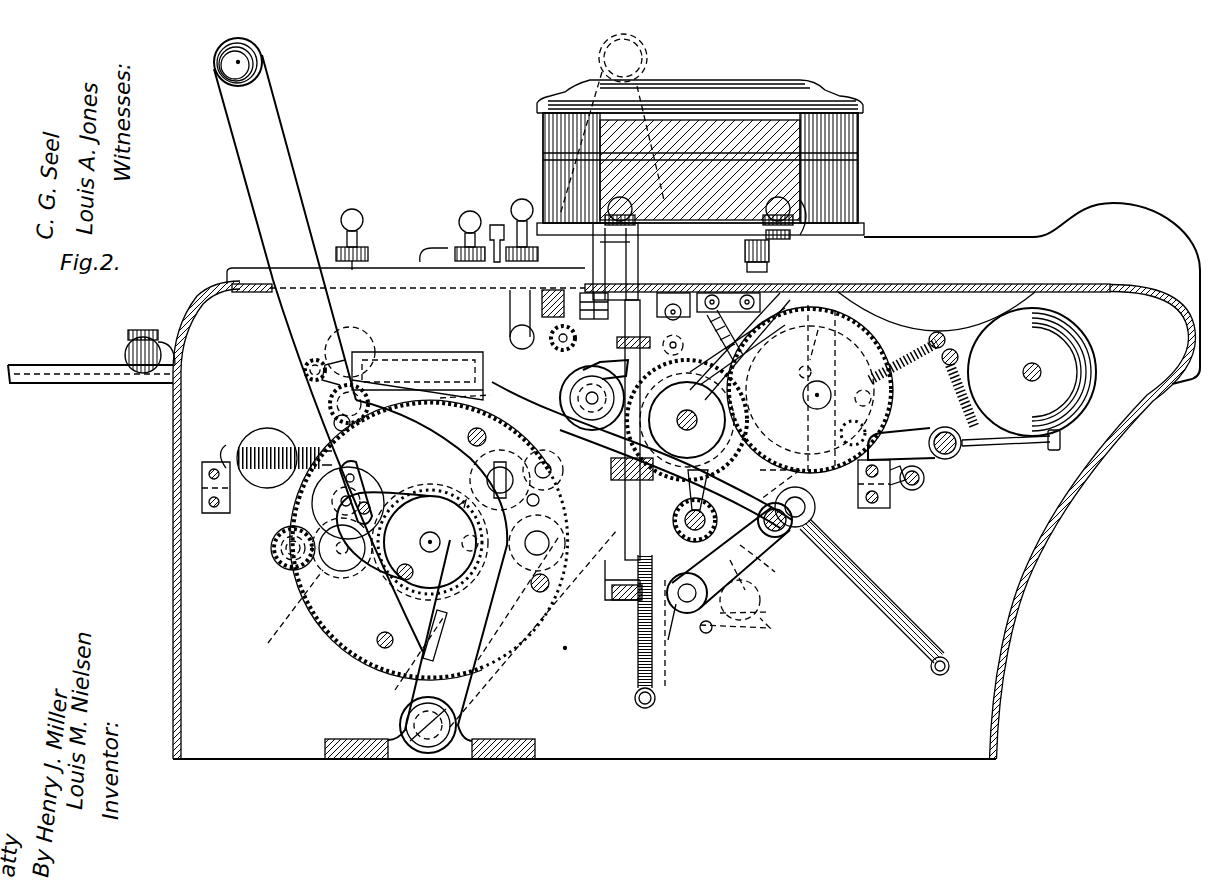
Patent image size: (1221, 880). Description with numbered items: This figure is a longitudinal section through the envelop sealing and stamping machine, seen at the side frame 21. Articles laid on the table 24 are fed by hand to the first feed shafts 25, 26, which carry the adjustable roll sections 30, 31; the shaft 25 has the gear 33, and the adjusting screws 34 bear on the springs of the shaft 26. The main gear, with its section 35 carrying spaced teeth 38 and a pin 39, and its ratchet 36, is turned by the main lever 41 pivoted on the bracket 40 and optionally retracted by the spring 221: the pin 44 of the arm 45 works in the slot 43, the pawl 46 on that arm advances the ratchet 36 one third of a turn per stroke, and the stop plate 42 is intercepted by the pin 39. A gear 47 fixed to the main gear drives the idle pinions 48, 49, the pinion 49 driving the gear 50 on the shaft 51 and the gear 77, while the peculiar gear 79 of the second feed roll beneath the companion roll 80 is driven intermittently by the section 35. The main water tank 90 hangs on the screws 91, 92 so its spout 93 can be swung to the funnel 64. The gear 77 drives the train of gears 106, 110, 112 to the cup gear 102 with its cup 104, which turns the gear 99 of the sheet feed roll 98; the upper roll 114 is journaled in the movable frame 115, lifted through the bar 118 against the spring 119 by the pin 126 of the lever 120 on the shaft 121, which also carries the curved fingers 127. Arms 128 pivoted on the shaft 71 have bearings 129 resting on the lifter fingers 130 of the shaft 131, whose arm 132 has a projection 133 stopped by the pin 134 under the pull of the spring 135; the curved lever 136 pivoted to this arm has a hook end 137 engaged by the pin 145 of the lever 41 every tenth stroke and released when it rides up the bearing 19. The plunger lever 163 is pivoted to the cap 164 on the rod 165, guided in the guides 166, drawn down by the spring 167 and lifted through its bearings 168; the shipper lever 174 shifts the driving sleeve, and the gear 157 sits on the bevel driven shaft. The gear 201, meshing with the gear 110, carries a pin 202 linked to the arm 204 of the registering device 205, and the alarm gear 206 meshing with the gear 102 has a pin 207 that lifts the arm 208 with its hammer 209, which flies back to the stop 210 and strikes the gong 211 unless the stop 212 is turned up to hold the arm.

The bearing 19 is at (236, 438).
The side frame 21 is at (684, 513).
The table 24 is at (45, 370).
The first feed shaft 25 is at (334, 424).
The first feed shaft 26 is at (350, 356).
The roll section 30 is at (305, 380).
The roll section 31 is at (362, 335).
The gear 33 is at (328, 404).
The adjusting screw 34 is at (360, 235).
The main gear section 35 is at (540, 685).
The ratchet 36 is at (395, 585).
The spaced teeth 38 is at (315, 661).
The pin 39 is at (410, 642).
The bracket 40 is at (520, 740).
The main lever 41 is at (318, 345).
The stop plate 42 is at (486, 576).
The slot 43 is at (370, 468).
The pin 44 is at (430, 542).
The arm 45 is at (406, 540).
The pawl 46 is at (348, 572).
The gear 47 is at (444, 635).
The idle pinion 48 is at (292, 606).
The idle pinion 49 is at (468, 440).
The gear 50 is at (285, 558).
The shaft 51 is at (270, 547).
The funnel 64 is at (417, 244).
The shaft 71 is at (580, 647).
The gear 77 is at (557, 472).
The gear 79 is at (478, 448).
The companion roll 80 is at (512, 330).
The main water tank 90 is at (858, 140).
The screw 91 is at (608, 204).
The screw 92 is at (790, 210).
The spout 93 is at (438, 258).
The sheet feed roll 98 is at (750, 334).
The gear 99 is at (756, 349).
The cup gear 102 is at (810, 401).
The cup 104 is at (800, 404).
The gear 106 is at (614, 467).
The gear 110 is at (642, 444).
The gear 112 is at (536, 541).
The upper sheet feed roll 114 is at (678, 292).
The vertically movable frame 115 is at (700, 292).
The bar 118 is at (818, 340).
The spring 119 is at (906, 355).
The lever 120 is at (818, 272).
The shaft 121 is at (800, 520).
The pin 126 is at (805, 368).
The curved finger 127 is at (771, 564).
The arm 128 is at (658, 693).
The projecting bearing 129 is at (760, 604).
The lifter finger 130 is at (770, 628).
The shaft 131 is at (686, 612).
The arm 132 is at (746, 590).
The projection 133 is at (712, 630).
The pin 134 is at (708, 634).
The spring 135 is at (922, 640).
The curved lever 136 is at (763, 488).
The hook end 137 is at (466, 352).
The pin 145 is at (455, 410).
The gear 157 is at (554, 306).
The lever 163 is at (638, 243).
The cap 164 is at (620, 323).
The rod 165 is at (625, 531).
The guide 166 is at (617, 343).
The spring 167 is at (636, 670).
The projecting bearing 168 is at (687, 420).
The shipper lever 174 is at (158, 318).
The gear 201 is at (681, 506).
The pin 202 is at (731, 557).
The arm 204 is at (737, 292).
The registering device 205 is at (755, 240).
The alarm gear 206 is at (831, 478).
The pin 207 is at (880, 420).
The arm 208 is at (914, 443).
The hammer 209 is at (1003, 445).
The stop 210 is at (890, 505).
The gong 211 is at (1098, 360).
The stop 212 is at (925, 479).
The retracting spring 221 is at (252, 490).